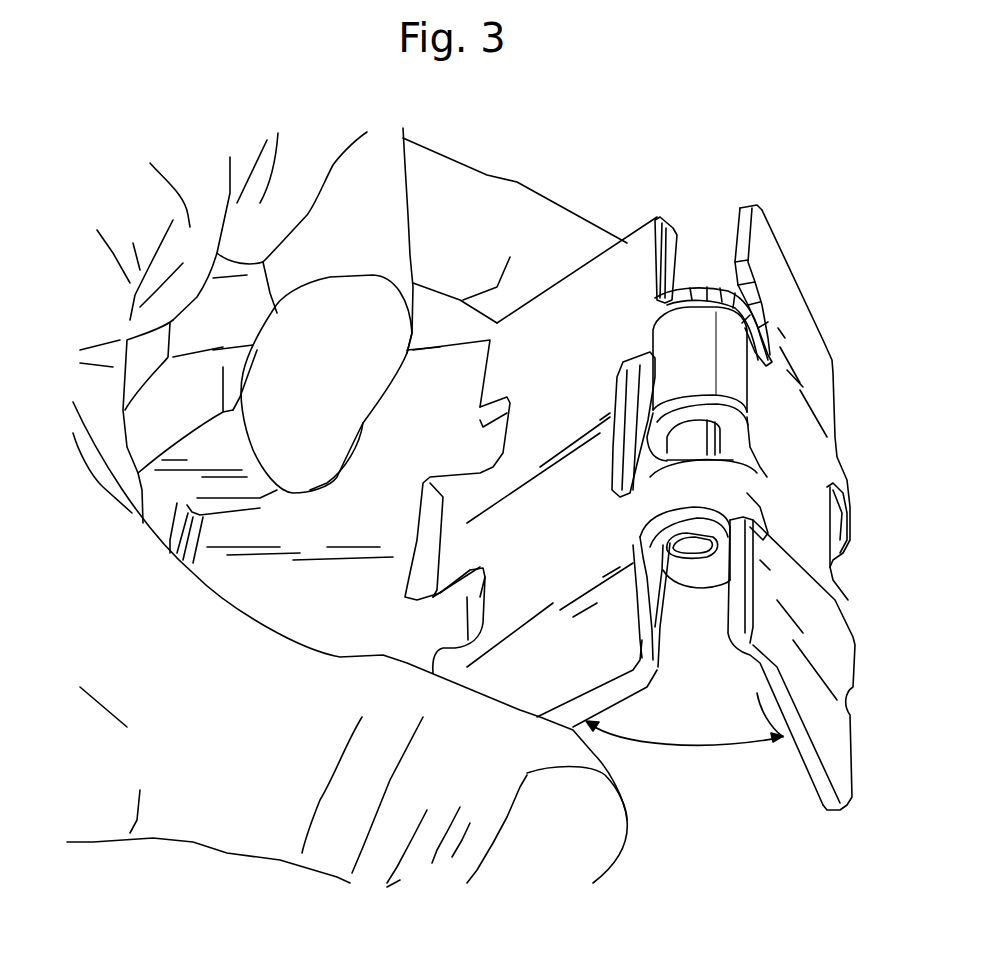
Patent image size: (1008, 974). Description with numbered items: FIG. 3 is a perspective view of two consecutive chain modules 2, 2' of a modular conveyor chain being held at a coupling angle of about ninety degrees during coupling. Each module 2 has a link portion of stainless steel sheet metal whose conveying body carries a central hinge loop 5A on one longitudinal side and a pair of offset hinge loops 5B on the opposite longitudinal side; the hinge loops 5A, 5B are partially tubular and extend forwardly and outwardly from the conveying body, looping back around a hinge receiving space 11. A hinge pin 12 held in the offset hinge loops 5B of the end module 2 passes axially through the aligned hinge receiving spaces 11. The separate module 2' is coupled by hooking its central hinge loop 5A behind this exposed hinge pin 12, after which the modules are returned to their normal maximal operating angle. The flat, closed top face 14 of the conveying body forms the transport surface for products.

The module 2 is at (423, 420).
The separate module 2' is at (793, 502).
The central hinge loop 5A is at (695, 317).
The offset hinge loops 5B is at (718, 318).
The hinge receiving space 11 is at (697, 563).
The hinge pin 12 is at (690, 447).
The top face 14 is at (633, 257).